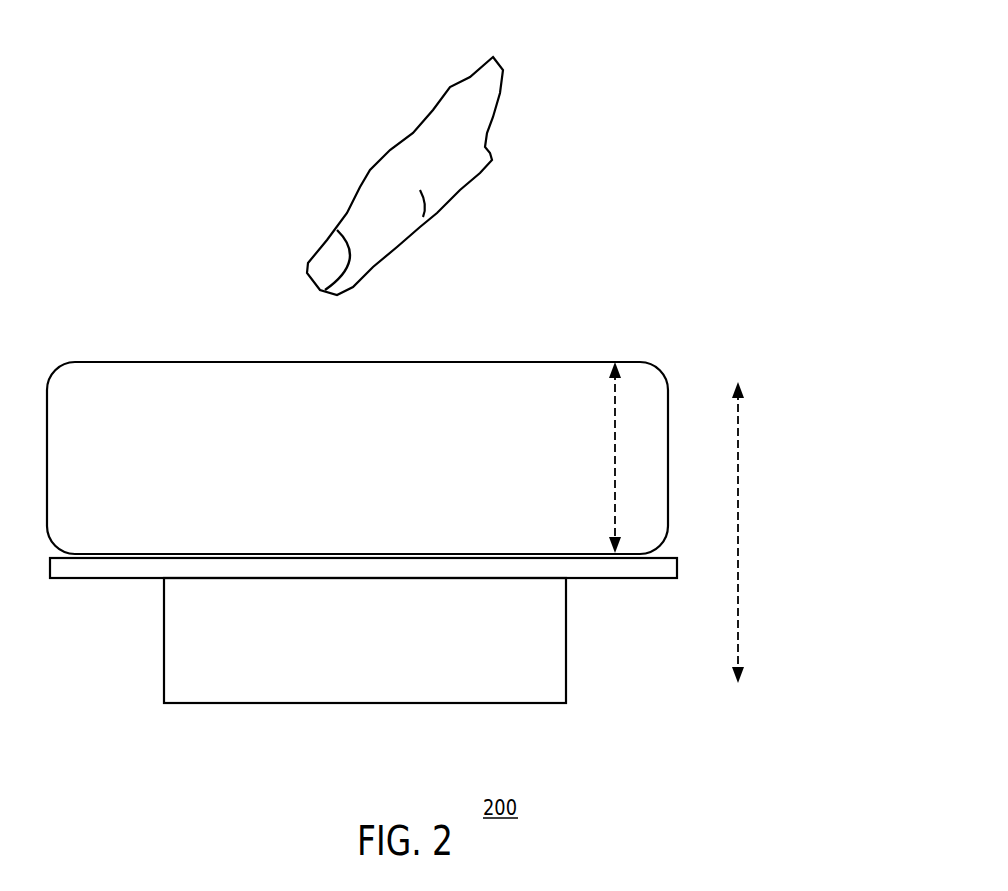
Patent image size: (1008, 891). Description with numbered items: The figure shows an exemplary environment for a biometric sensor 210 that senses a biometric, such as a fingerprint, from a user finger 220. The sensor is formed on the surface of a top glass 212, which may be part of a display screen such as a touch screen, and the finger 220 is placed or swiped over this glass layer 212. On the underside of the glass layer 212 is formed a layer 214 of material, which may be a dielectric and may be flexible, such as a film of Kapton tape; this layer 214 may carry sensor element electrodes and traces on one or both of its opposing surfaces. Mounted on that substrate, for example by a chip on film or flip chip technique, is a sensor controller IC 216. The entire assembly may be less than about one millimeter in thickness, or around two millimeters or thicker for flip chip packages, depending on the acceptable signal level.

The biometric sensor 210 is at (659, 273).
The top glass 212 is at (122, 362).
The layer of material 214 is at (633, 580).
The sensor controller IC 216 is at (240, 692).
The user finger 220 is at (368, 173).